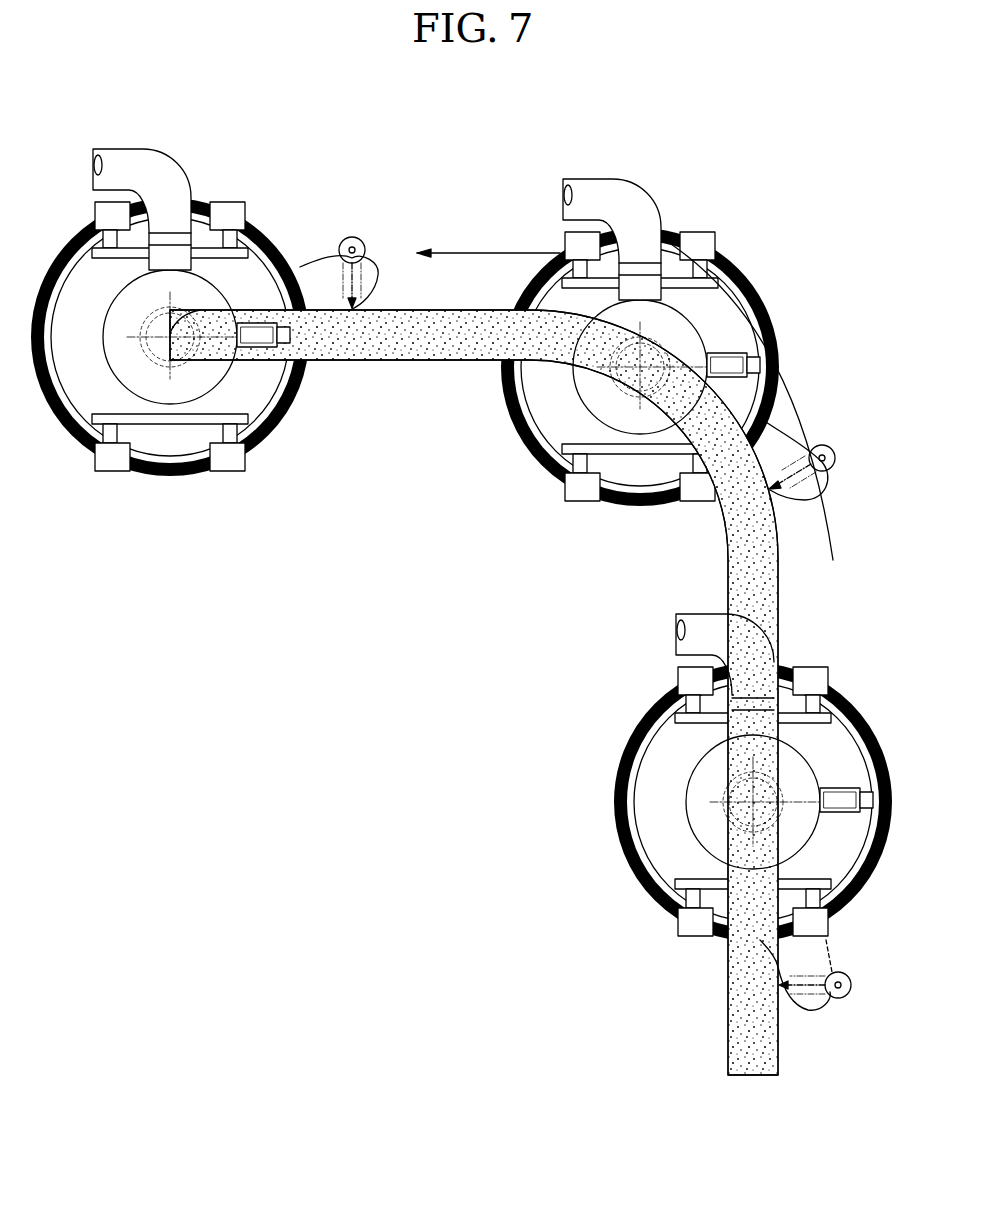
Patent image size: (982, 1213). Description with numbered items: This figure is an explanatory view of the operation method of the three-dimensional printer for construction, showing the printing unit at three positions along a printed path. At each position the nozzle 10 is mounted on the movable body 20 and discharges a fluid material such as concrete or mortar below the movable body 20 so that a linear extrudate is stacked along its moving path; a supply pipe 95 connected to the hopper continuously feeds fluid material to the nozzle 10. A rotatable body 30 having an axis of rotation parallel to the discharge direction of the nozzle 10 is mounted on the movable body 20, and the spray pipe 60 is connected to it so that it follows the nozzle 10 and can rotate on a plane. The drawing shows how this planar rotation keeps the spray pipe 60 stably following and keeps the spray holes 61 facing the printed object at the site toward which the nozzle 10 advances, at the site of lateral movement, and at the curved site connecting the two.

The nozzle 10 is at (175, 333).
The movable body 20 is at (87, 293).
The rotatable body 30 is at (289, 408).
The supply pipe 95 is at (163, 173).
The spray pipe 60 is at (823, 447).
The spray holes 61 is at (818, 996).